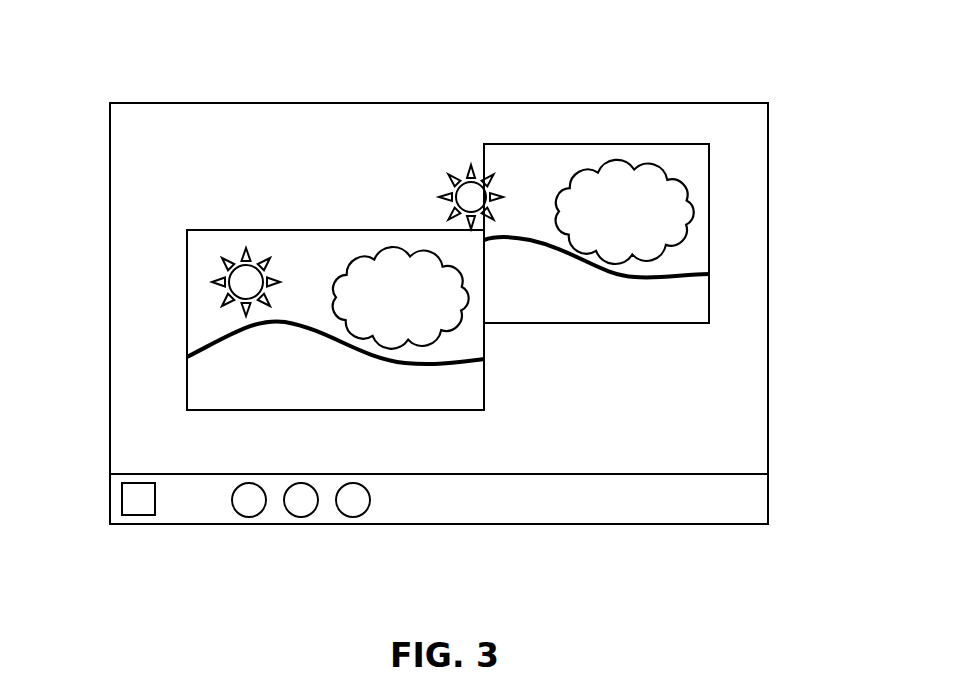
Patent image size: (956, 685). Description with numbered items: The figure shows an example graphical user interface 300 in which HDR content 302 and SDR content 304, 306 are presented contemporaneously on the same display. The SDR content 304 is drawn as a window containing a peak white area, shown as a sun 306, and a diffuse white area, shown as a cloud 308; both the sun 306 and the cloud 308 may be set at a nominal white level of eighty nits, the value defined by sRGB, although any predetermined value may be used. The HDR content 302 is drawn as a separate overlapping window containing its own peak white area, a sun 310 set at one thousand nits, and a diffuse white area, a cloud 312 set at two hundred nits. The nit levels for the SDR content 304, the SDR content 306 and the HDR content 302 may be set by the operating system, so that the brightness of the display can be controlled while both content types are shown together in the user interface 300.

The graphical user interface 300 is at (128, 66).
The HDR content 302 is at (187, 380).
The SDR content 304 is at (705, 298).
The sun 306 is at (477, 175).
The cloud 308 is at (625, 167).
The sun 310 is at (228, 262).
The cloud 312 is at (355, 257).